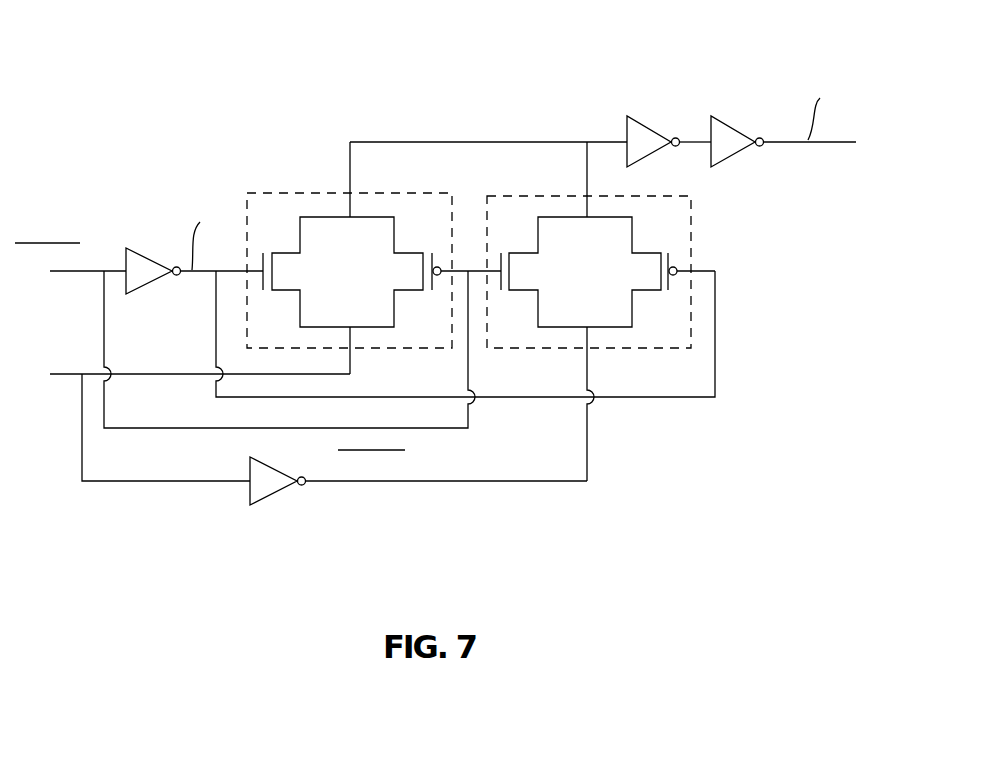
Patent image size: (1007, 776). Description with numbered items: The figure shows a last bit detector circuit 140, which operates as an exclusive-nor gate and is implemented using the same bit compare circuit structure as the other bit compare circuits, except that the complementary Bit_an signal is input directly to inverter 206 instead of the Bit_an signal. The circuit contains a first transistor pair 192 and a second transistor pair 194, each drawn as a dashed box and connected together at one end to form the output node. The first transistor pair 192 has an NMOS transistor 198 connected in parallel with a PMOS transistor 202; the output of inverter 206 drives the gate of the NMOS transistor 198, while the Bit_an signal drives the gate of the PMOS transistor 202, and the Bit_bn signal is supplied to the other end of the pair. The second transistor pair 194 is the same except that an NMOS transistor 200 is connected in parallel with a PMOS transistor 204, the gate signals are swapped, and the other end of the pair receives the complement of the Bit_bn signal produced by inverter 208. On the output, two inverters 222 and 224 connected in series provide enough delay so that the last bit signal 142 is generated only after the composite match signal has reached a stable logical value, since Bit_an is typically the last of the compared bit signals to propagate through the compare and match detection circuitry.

The last bit detector circuit 140 is at (278, 95).
The last bit output 142 is at (836, 141).
The first transistor pair 192 is at (451, 203).
The second transistor pair 194 is at (691, 222).
The NMOS transistor 198 is at (300, 269).
The NMOS transistor 200 is at (536, 269).
The PMOS transistor 202 is at (397, 277).
The PMOS transistor 204 is at (633, 279).
The inverter 206 is at (160, 256).
The inverter 208 is at (266, 471).
The inverter 222 is at (646, 124).
The inverter 224 is at (733, 124).